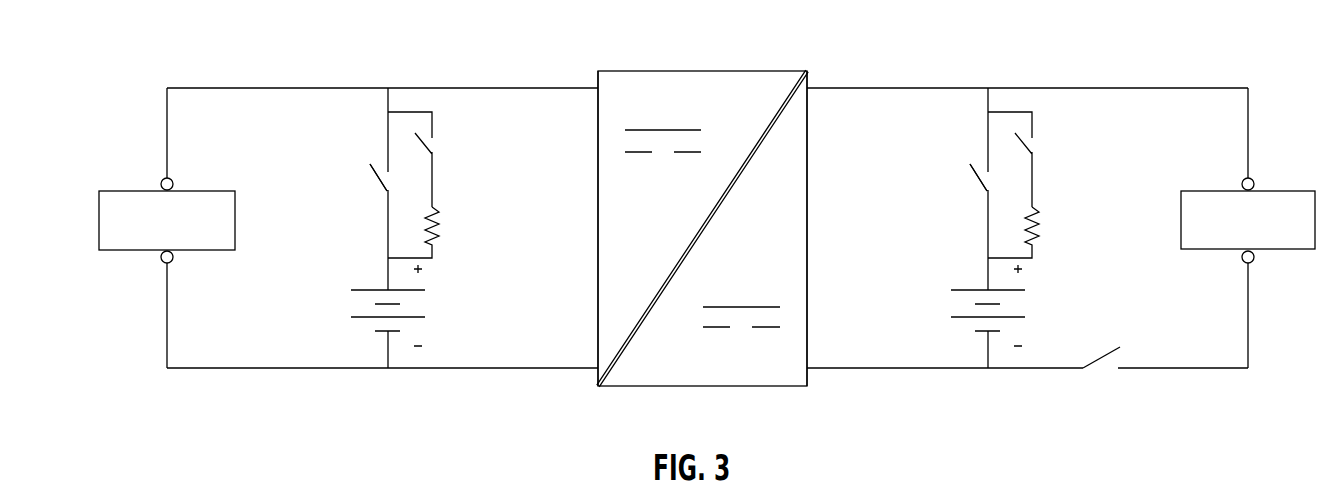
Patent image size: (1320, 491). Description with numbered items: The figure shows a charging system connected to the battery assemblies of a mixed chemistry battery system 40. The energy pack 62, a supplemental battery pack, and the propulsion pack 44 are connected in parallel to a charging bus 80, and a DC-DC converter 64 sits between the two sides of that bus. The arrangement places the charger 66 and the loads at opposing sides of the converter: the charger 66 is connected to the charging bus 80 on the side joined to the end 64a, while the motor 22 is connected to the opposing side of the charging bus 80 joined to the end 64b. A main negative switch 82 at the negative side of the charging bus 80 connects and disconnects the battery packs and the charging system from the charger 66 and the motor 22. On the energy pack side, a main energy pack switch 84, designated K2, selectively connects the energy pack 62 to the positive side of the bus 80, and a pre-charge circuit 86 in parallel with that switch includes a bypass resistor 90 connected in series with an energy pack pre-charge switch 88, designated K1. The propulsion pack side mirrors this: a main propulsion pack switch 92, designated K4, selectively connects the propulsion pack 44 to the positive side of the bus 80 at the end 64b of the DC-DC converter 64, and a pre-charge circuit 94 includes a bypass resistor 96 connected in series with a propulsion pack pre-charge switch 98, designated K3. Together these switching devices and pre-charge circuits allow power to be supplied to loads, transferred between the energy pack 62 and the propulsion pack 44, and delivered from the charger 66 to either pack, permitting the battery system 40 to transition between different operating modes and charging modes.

The motor 22 is at (1273, 205).
The battery system 40 is at (707, 219).
The propulsion pack 44 is at (1018, 318).
The energy pack 62 is at (418, 318).
The DC-DC converter 64 is at (702, 70).
The end of DC-DC converter 64a is at (598, 312).
The end of DC-DC converter 64b is at (807, 233).
The charger 66 is at (146, 220).
The charging bus 80 is at (906, 88).
The main negative switch 82 is at (1100, 357).
The main energy pack switch 84 is at (385, 187).
The pre-charge circuit 86 is at (460, 140).
The energy pack pre-charge switch 88 is at (433, 113).
The bypass resistor 90 is at (425, 214).
The main propulsion pack switch 92 is at (985, 187).
The pre-charge circuit 94 is at (1050, 140).
The bypass resistor 96 is at (1025, 214).
The propulsion pack pre-charge switch 98 is at (1033, 113).
The energy pack pre-charge switch K1 is at (427, 152).
The main energy pack switch K2 is at (380, 178).
The propulsion pack pre-charge switch K3 is at (1027, 152).
The main propulsion pack switch K4 is at (980, 178).